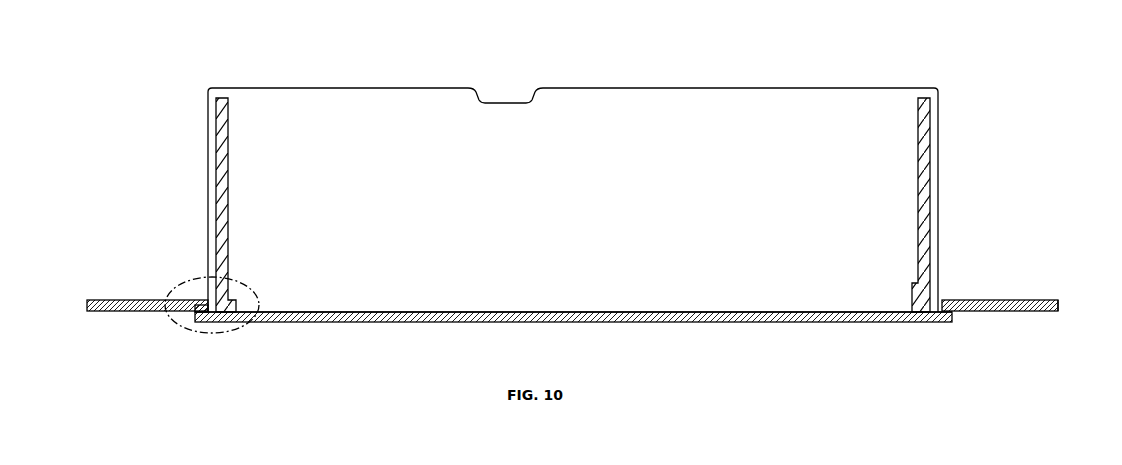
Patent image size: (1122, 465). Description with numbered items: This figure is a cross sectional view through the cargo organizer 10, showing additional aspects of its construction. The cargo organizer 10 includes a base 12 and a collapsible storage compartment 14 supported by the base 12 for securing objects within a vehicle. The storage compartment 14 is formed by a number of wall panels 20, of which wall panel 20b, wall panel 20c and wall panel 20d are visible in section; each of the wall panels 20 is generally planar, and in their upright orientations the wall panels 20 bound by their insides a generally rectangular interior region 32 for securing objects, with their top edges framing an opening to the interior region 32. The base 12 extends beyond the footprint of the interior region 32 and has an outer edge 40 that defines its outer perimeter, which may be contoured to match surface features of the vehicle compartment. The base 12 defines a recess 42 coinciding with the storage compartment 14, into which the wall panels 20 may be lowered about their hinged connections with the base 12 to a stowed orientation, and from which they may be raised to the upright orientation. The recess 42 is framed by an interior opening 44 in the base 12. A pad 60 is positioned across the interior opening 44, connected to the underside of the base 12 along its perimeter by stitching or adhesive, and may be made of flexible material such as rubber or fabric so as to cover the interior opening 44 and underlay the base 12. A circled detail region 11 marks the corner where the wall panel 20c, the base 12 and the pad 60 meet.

The cargo organizer 10 is at (192, 68).
The storage compartment 14 is at (246, 82).
The wall panels 20 is at (591, 188).
The wall panel 20b is at (284, 116).
The wall panel 20c is at (222, 157).
The wall panel 20d is at (931, 150).
The interior region 32 is at (573, 207).
The interior opening 44 is at (426, 307).
The recess 42 is at (573, 286).
The pad 60 is at (728, 323).
The base 12 is at (1005, 294).
The outer edge 40 is at (1060, 308).
The detail region 11 is at (243, 282).